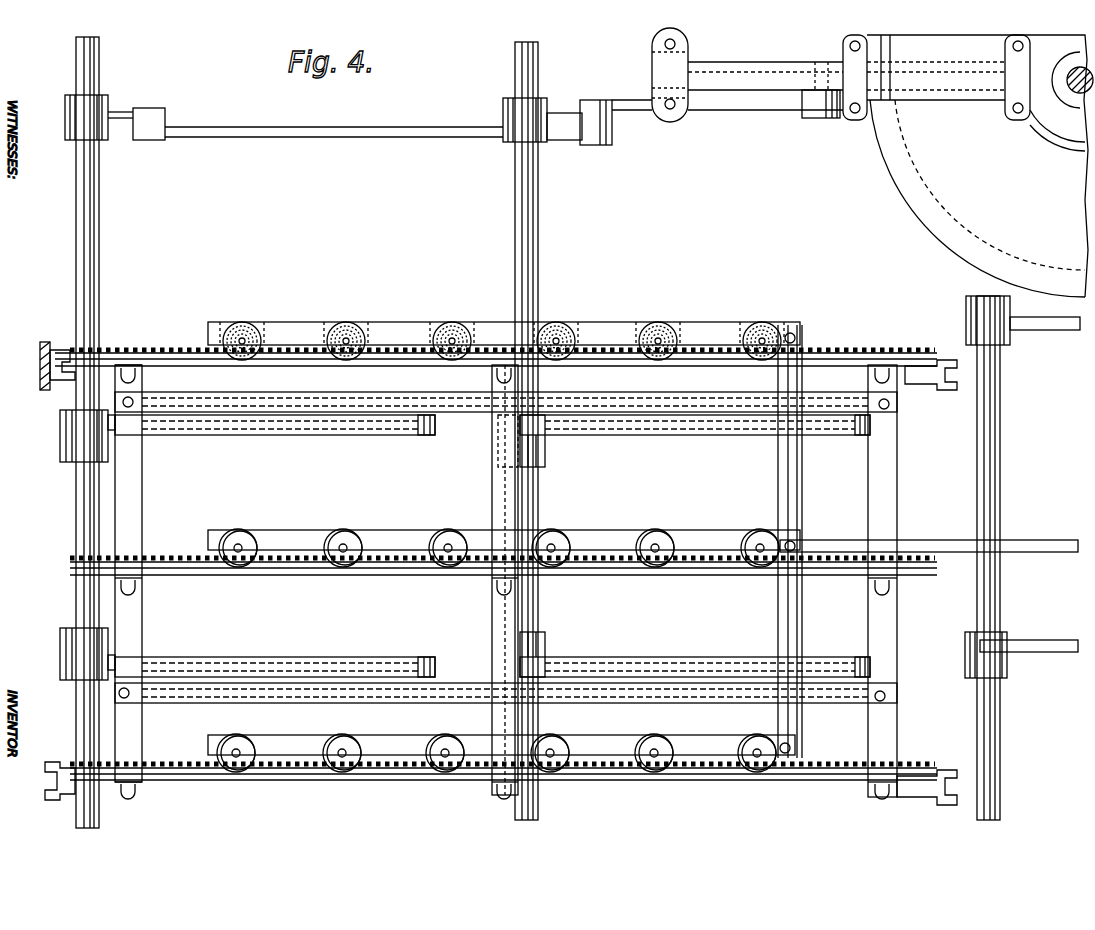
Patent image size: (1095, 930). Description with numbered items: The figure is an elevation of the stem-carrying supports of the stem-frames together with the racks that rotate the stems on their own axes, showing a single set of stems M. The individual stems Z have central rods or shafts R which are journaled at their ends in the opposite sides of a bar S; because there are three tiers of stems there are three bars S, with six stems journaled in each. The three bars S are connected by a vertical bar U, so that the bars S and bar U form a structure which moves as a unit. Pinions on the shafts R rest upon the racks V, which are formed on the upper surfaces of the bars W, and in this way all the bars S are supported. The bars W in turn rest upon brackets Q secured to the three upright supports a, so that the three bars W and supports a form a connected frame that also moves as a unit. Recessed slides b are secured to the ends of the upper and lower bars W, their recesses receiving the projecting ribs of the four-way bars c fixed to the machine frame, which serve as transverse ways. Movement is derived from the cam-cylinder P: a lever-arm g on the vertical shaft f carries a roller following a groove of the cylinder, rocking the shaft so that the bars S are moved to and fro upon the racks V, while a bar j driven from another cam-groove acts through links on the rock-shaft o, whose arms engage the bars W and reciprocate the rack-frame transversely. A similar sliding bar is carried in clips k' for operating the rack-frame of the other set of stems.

The upright supports a is at (142, 640).
The recessed slides b is at (60, 385).
The four-way bars c is at (36, 366).
The vertical shaft f is at (1021, 558).
The lever-arm g is at (1046, 324).
The bar j is at (765, 89).
The clips k' is at (670, 75).
The rock-shaft o is at (1078, 94).
The cam-cylinder P is at (965, 166).
The brackets Q is at (142, 583).
The central rods or shafts R is at (452, 345).
The stem-supporting bar S is at (504, 533).
The vertical bar U is at (798, 541).
The racks V is at (606, 766).
The bars W is at (496, 582).
The stems Z is at (244, 530).
The set of stems M is at (506, 547).